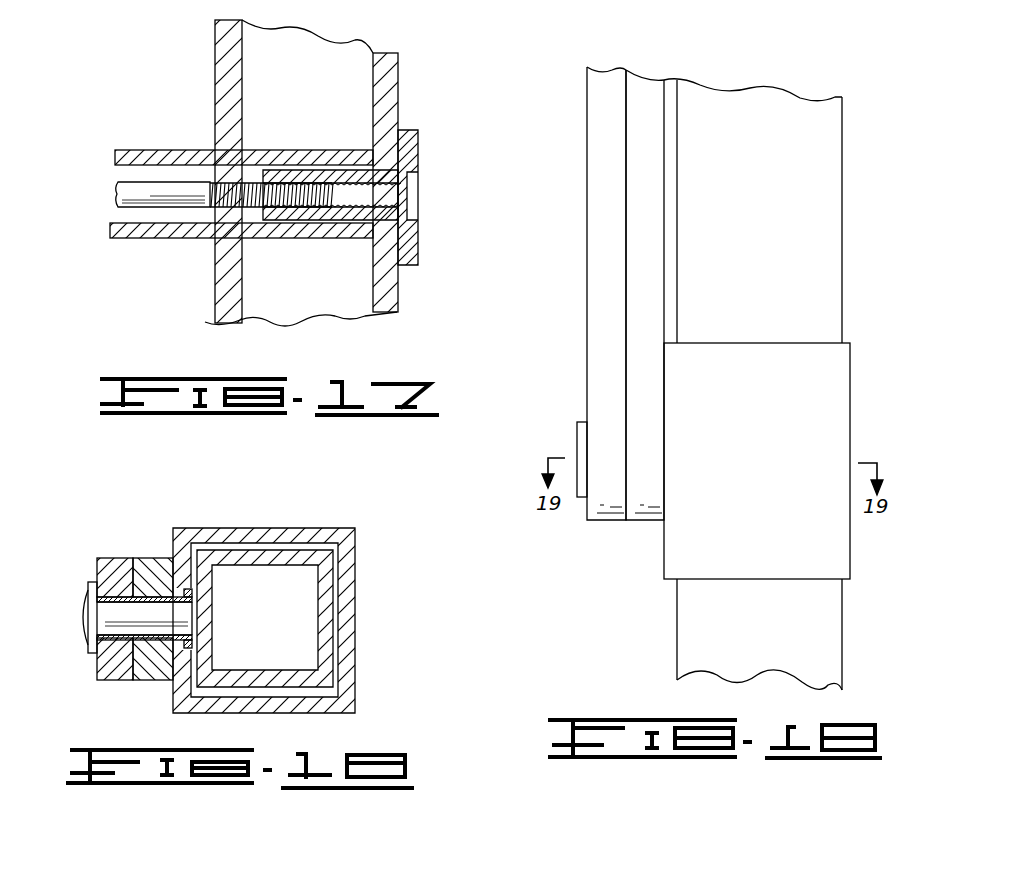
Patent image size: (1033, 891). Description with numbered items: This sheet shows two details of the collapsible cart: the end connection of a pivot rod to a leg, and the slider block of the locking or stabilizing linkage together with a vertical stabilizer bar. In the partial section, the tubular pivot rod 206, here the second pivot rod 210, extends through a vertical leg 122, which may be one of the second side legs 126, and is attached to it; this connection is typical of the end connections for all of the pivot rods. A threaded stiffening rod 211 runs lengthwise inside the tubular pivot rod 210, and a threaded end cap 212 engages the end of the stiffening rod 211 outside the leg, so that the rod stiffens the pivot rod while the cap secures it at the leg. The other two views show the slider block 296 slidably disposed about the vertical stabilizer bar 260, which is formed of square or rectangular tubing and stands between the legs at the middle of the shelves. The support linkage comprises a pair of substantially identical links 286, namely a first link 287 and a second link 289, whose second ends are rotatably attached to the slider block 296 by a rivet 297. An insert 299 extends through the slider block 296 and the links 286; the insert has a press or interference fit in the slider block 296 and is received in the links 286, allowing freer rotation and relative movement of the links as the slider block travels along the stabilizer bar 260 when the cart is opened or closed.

In FIG. 17, the vertical leg 122 is at (212, 179).
In FIG. 17, the second side leg 126 is at (217, 315).
In FIG. 17, the pivot rod 206 is at (200, 221).
In FIG. 17, the second pivot rod 210 is at (155, 240).
In FIG. 17, the threaded stiffening rod 211 is at (142, 187).
In FIG. 17, the threaded end cap 212 is at (418, 133).
In FIG. 18, the vertical stabilizer bar 260 is at (338, 645).
In FIG. 19, the vertical stabilizer bar 260 is at (843, 182).
In FIG. 19, the link 286 is at (533, 293).
In FIG. 18, the first link 287 is at (148, 680).
In FIG. 19, the first link 287 is at (645, 97).
In FIG. 18, the second link 289 is at (110, 677).
In FIG. 19, the second link 289 is at (597, 363).
In FIG. 18, the slider block 296 is at (355, 550).
In FIG. 19, the slider block 296 is at (850, 343).
In FIG. 18, the rivet 297 is at (90, 597).
In FIG. 19, the rivet 297 is at (577, 430).
In FIG. 18, the insert 299 is at (117, 595).